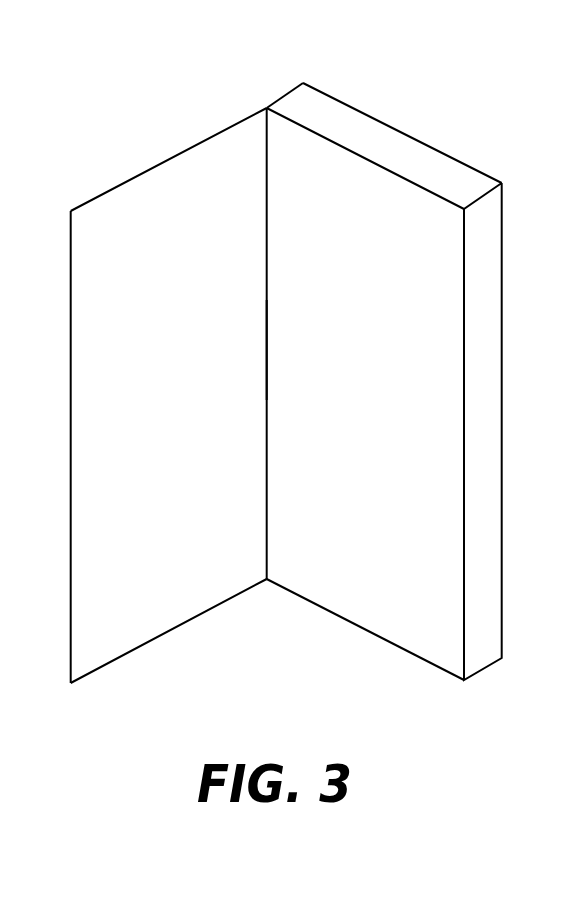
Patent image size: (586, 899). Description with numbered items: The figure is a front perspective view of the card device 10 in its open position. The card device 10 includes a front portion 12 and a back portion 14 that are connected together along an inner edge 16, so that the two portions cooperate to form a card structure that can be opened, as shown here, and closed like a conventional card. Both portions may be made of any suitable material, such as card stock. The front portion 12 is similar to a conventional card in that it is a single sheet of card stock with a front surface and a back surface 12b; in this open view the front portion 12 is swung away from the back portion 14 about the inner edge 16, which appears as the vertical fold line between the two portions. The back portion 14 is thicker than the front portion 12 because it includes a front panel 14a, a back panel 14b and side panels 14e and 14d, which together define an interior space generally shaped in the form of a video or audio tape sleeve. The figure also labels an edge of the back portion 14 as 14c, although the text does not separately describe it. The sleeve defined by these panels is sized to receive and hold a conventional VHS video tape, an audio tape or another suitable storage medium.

The card device 10 is at (216, 114).
The front portion 12 is at (197, 392).
The back surface 12b is at (82, 497).
The back portion 14 is at (385, 318).
The front panel 14a is at (380, 622).
The back panel 14b is at (133, 372).
The top edge of second panel 14c is at (388, 143).
The side panel 14d is at (482, 328).
The side panel 14e is at (299, 83).
The inner edge 16 is at (268, 413).